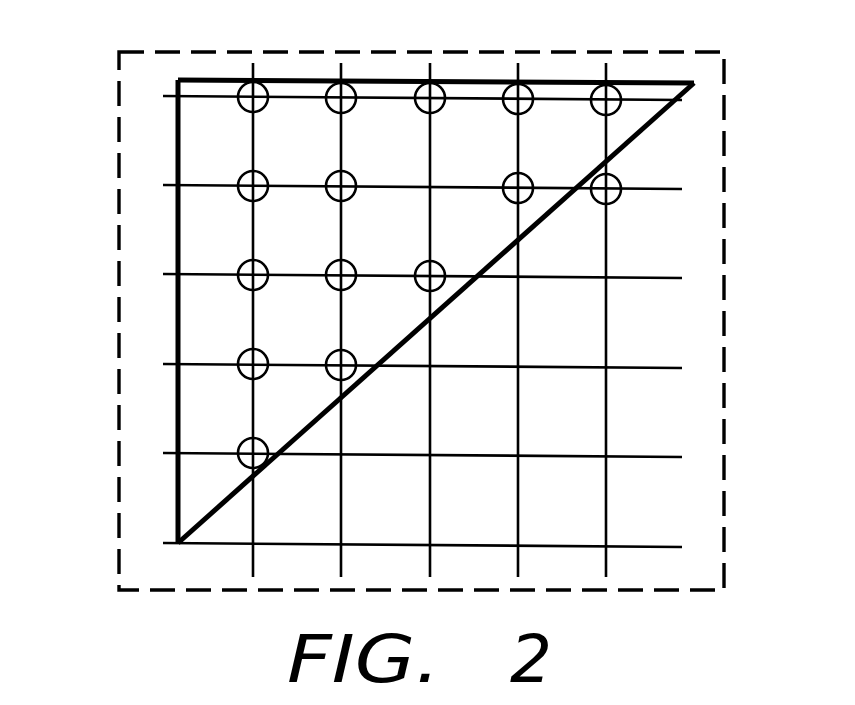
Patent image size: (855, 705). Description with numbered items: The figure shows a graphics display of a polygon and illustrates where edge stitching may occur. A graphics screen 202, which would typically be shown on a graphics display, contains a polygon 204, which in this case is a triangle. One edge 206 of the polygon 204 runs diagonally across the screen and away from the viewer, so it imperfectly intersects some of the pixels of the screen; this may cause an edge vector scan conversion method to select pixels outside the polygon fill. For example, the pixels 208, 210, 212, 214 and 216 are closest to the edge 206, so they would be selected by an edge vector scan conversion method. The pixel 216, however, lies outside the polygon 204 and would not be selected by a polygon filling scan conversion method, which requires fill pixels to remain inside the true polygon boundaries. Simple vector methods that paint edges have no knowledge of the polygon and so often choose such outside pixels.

The graphics screen 202 is at (402, 52).
The polygon 204 is at (178, 81).
The edge 206 is at (640, 140).
The pixel 208 is at (285, 420).
The pixel 210 is at (375, 332).
The pixel 212 is at (437, 262).
The pixel 214 is at (525, 174).
The pixel 216 is at (617, 200).